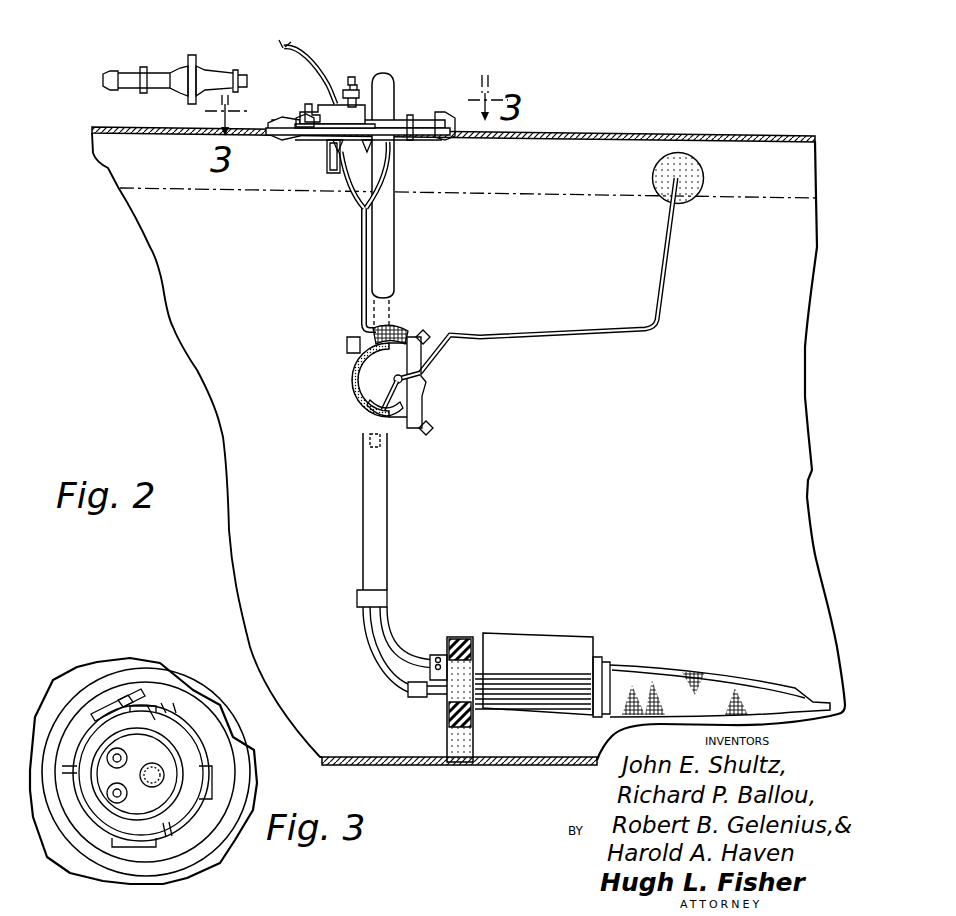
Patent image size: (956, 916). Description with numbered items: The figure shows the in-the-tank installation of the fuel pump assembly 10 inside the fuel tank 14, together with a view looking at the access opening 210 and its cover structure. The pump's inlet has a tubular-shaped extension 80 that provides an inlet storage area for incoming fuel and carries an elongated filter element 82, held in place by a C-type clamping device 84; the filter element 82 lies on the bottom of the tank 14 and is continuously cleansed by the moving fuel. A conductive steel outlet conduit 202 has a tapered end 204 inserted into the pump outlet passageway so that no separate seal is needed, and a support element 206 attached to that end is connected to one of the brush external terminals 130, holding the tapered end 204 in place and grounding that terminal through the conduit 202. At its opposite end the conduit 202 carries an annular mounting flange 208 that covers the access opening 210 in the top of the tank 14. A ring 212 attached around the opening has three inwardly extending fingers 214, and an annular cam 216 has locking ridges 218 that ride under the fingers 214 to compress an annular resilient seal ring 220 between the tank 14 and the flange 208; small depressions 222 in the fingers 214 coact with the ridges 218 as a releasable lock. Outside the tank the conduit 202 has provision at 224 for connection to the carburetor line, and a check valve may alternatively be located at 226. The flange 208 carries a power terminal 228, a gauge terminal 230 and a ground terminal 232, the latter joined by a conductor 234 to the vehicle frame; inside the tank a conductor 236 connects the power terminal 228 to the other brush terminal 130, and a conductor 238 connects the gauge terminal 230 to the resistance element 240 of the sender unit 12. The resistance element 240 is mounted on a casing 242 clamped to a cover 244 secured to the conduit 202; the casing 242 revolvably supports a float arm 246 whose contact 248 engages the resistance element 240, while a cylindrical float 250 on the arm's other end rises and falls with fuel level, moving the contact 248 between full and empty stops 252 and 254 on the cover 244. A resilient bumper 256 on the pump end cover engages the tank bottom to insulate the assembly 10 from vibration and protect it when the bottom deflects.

In FIG. 2, the fuel pump assembly 10 is at (586, 633).
In FIG. 2, the sender unit 12 is at (505, 327).
In FIG. 2, the fuel tank 14 is at (737, 134).
In FIG. 2, the tubular-shaped extension 80 is at (622, 682).
In FIG. 2, the filter element 82 is at (735, 682).
In FIG. 2, the C-type clamping device 84 is at (612, 660).
In FIG. 2, the brush external terminal 130 is at (422, 682).
In FIG. 2, the outlet conduit 202 is at (383, 555).
In FIG. 3, the outlet conduit 202 is at (163, 762).
In FIG. 2, the tapered end 204 is at (432, 694).
In FIG. 2, the support element 206 is at (437, 655).
In FIG. 2, the mounting flange 208 is at (455, 132).
In FIG. 3, the mounting flange 208 is at (167, 807).
In FIG. 2, the access opening 210 is at (438, 141).
In FIG. 2, the ring 212 is at (270, 120).
In FIG. 3, the ring 212 is at (157, 703).
In FIG. 3, the fingers 214 is at (180, 720).
In FIG. 2, the annular cam 216 is at (420, 123).
In FIG. 3, the annular cam 216 is at (203, 782).
In FIG. 3, the locking ridges 218 is at (192, 751).
In FIG. 2, the resilient seal ring 220 is at (327, 152).
In FIG. 3, the depressions 222 is at (173, 720).
In FIG. 2, the connection provision 224 is at (133, 72).
In FIG. 2, the check valve location 226 is at (195, 66).
In FIG. 2, the power terminal 228 is at (346, 88).
In FIG. 3, the power terminal 228 is at (117, 794).
In FIG. 2, the gauge terminal 230 is at (360, 82).
In FIG. 3, the gauge terminal 230 is at (114, 757).
In FIG. 2, the ground terminal 232 is at (305, 131).
In FIG. 3, the ground terminal 232 is at (118, 705).
In FIG. 2, the conductor 234 is at (312, 124).
In FIG. 3, the conductor 234 is at (97, 710).
In FIG. 2, the conductor 236 is at (358, 208).
In FIG. 2, the conductor 238 is at (362, 281).
In FIG. 2, the resistance element 240 is at (366, 416).
In FIG. 2, the casing 242 is at (353, 386).
In FIG. 2, the cover 244 is at (349, 352).
In FIG. 2, the float arm 246 is at (606, 323).
In FIG. 2, the contact 248 is at (416, 400).
In FIG. 2, the float 250 is at (700, 183).
In FIG. 2, the full stop 252 is at (427, 333).
In FIG. 2, the empty stop 254 is at (432, 428).
In FIG. 2, the bumper 256 is at (474, 638).